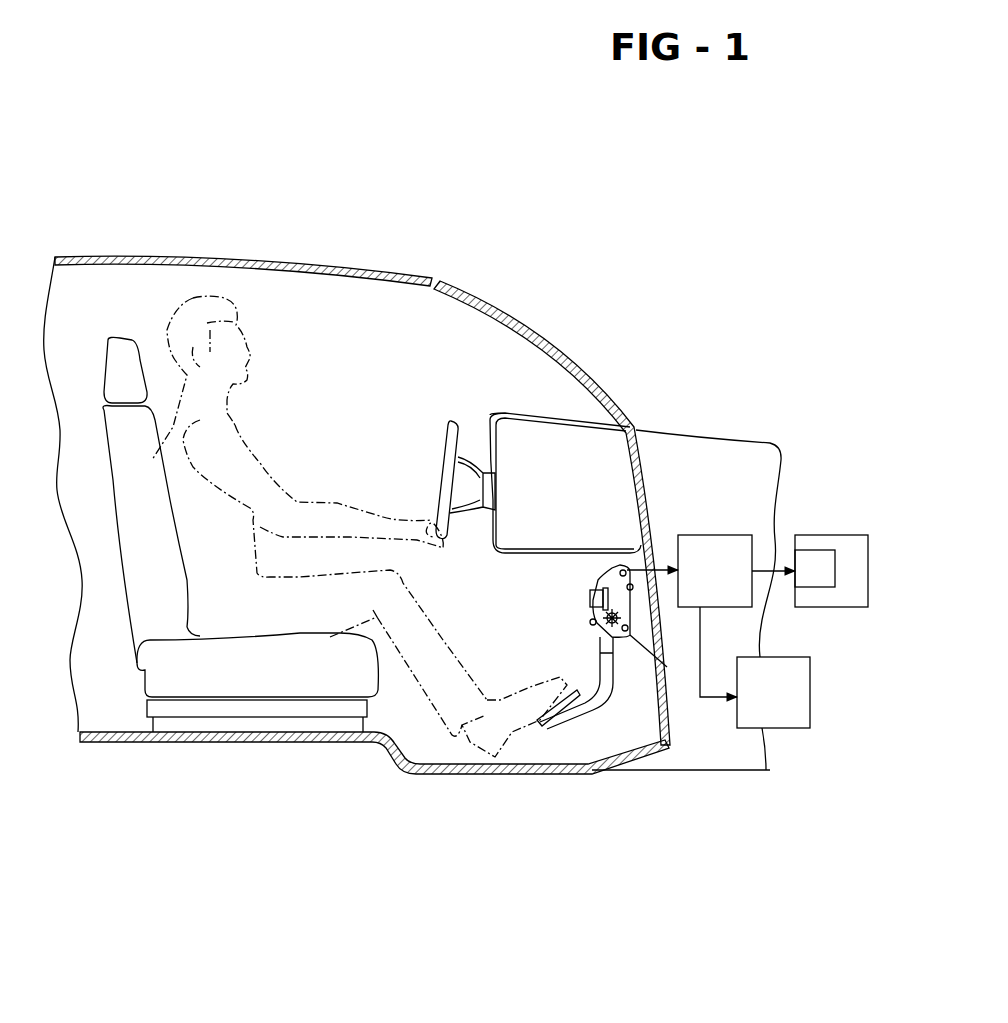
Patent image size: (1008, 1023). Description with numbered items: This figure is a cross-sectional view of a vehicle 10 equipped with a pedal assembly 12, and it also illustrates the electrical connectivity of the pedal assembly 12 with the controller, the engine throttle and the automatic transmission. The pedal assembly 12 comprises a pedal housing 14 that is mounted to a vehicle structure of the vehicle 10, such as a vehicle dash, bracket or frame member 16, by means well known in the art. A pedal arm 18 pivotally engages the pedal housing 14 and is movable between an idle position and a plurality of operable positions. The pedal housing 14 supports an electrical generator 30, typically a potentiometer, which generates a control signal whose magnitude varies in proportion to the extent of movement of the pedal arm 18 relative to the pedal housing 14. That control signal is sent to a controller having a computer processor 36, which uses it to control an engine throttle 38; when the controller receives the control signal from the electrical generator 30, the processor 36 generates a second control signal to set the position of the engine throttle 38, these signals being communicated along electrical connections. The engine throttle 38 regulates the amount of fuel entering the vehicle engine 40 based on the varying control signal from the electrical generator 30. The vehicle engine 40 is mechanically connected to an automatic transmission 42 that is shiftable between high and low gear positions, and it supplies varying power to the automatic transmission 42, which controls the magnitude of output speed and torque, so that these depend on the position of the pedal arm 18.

The vehicle 10 is at (208, 812).
The pedal assembly 12 is at (563, 583).
The pedal housing 14 is at (613, 583).
The vehicle dash, bracket or frame member 16 is at (668, 665).
The pedal arm 18 is at (591, 710).
The electrical generator 30 is at (587, 603).
The computer processor 36 is at (736, 616).
The engine throttle 38 is at (820, 563).
The vehicle engine 40 is at (840, 608).
The automatic transmission 42 is at (773, 692).